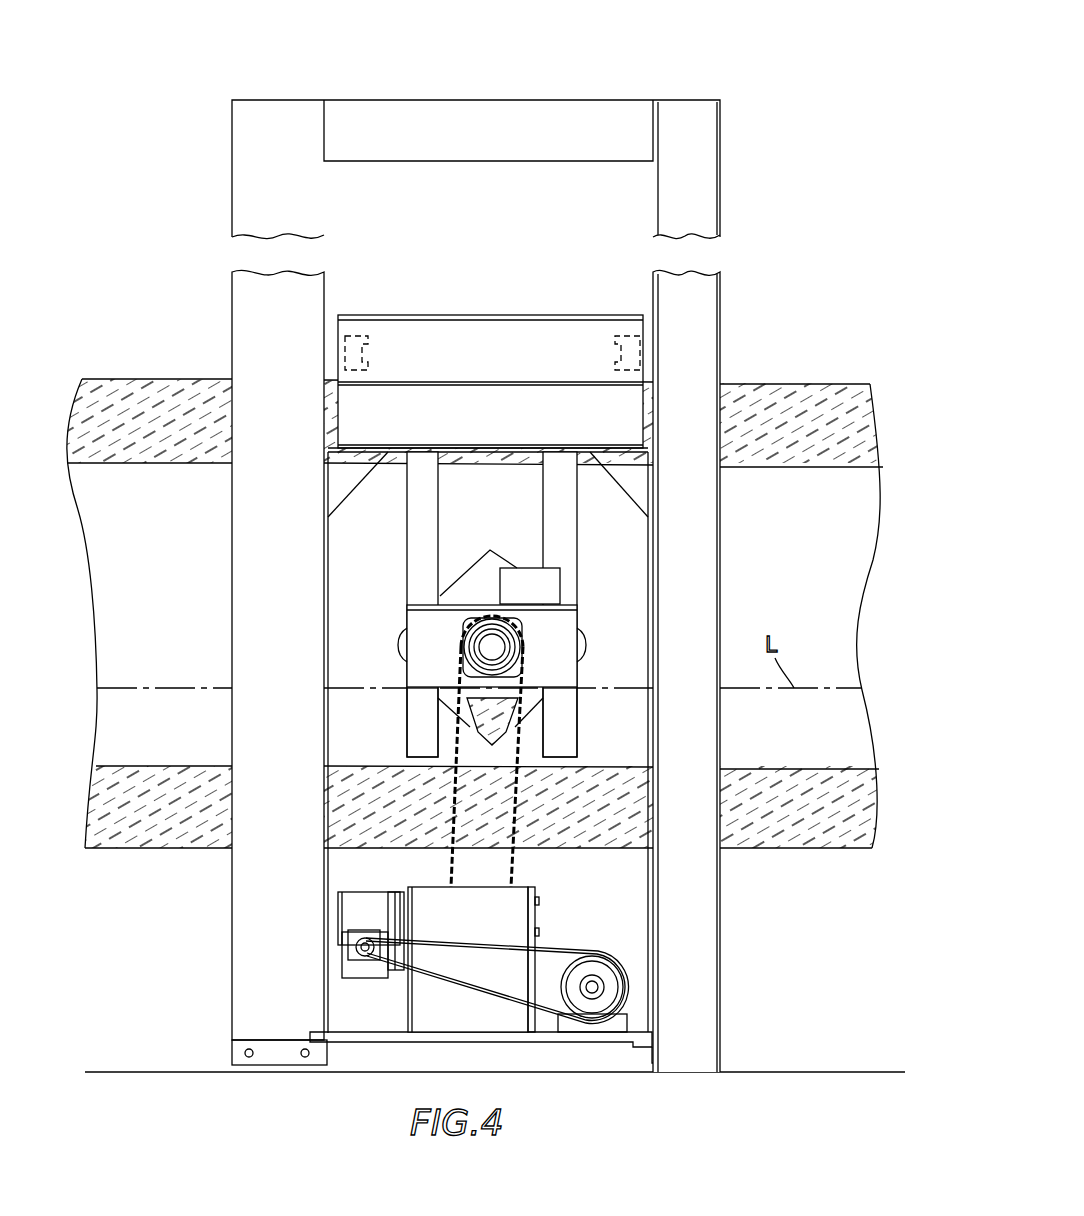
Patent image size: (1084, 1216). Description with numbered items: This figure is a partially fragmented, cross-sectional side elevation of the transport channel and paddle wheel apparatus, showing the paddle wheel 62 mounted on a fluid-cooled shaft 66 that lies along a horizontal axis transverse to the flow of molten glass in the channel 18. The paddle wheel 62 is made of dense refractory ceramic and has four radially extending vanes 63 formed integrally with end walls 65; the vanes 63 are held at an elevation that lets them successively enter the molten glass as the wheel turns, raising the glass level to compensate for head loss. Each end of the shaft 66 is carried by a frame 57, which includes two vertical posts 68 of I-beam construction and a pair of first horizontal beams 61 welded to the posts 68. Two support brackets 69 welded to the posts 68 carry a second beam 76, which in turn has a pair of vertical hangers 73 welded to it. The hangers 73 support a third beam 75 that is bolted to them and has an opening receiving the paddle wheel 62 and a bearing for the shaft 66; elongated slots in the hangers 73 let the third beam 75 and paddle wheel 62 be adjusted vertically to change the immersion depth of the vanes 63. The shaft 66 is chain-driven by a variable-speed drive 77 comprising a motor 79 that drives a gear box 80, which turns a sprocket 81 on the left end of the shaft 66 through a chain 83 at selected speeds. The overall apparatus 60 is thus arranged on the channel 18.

The channel 18 is at (780, 851).
The frame 57 is at (258, 93).
The carriage assembly 60 is at (737, 372).
The first horizontal beams 61 is at (370, 351).
The paddle wheel 62 is at (495, 549).
The vanes 63 is at (493, 740).
The end walls 65 is at (475, 572).
The fluid-cooled shaft 66 is at (497, 648).
The vertical posts 68 is at (230, 575).
The support brackets 69 is at (345, 475).
The vertical hangers 73 is at (410, 737).
The third beam 75 is at (425, 613).
The second beam 76 is at (455, 400).
The variable-speed drive 77 is at (494, 957).
The motor 79 is at (625, 972).
The gear box 80 is at (528, 892).
The sprocket 81 is at (465, 650).
The chain 83 is at (445, 855).